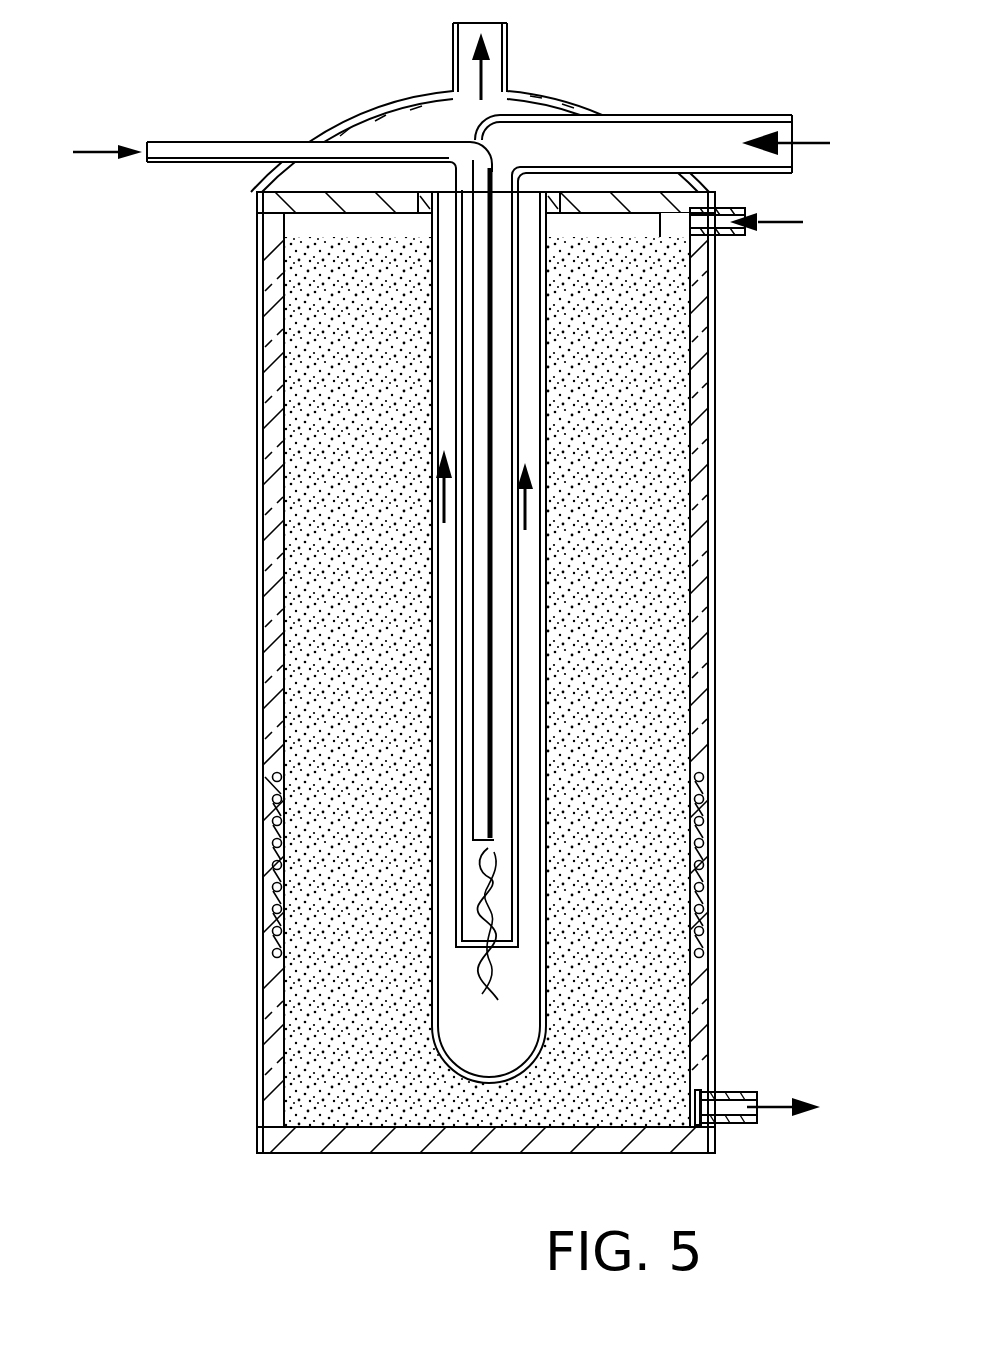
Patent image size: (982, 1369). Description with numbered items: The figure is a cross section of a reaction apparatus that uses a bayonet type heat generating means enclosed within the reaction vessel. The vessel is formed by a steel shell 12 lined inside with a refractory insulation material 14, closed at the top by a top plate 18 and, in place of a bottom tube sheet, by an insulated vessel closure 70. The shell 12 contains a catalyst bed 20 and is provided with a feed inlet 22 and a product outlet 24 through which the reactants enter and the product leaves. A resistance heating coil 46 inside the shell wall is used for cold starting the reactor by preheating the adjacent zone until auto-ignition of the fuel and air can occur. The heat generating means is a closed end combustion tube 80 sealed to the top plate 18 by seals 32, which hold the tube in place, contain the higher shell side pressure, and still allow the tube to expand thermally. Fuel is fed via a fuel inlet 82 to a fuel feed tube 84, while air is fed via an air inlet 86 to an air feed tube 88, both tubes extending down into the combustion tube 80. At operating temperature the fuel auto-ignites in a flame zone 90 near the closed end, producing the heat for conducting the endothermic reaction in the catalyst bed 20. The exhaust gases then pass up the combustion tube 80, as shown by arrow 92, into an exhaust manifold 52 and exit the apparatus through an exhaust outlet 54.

The steel shell 12 is at (257, 410).
The refractory insulation material 14 is at (262, 490).
The top plate 18 is at (308, 203).
The catalyst bed 20 is at (328, 995).
The feed inlet 22 is at (730, 237).
The product outlet 24 is at (740, 1125).
The seals 32 is at (582, 195).
The resistance heating coil 46 is at (262, 777).
The exhaust manifold 52 is at (335, 172).
The exhaust outlet 54 is at (510, 47).
The insulated vessel closure 70 is at (360, 1140).
The closed end combustion tube 80 is at (547, 610).
The fuel inlet 82 is at (218, 142).
The fuel feed tube 84 is at (492, 408).
The air inlet 86 is at (718, 115).
The air feed tube 88 is at (515, 442).
The flame zone 90 is at (490, 975).
The arrow 92 is at (527, 508).